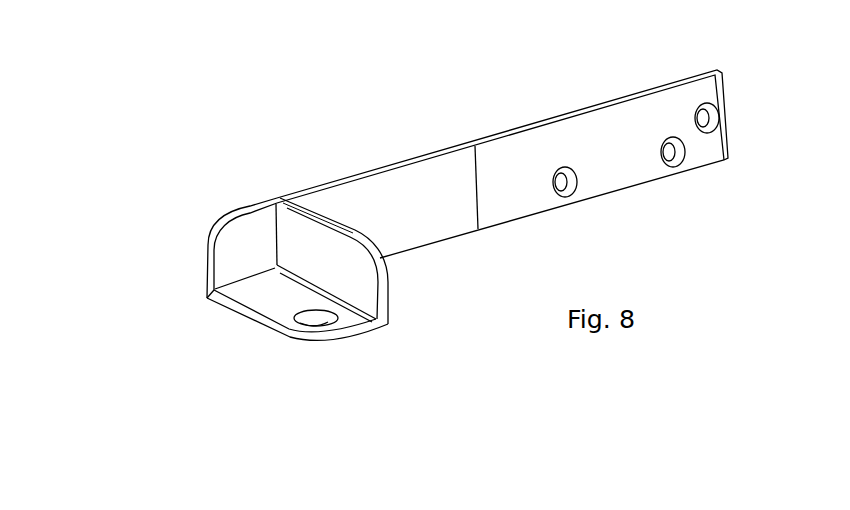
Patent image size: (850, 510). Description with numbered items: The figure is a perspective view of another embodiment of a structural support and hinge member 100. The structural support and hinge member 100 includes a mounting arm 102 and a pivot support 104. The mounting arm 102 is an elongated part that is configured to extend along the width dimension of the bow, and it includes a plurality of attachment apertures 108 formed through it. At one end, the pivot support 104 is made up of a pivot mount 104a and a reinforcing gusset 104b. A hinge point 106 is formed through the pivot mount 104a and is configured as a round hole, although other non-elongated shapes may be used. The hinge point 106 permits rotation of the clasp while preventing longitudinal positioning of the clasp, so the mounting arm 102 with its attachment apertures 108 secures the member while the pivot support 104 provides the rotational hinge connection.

The structural support and hinge member 100 is at (487, 250).
The mounting arm 102 is at (603, 137).
The pivot support 104 is at (295, 352).
The pivot mount 104a is at (247, 305).
The reinforcing gusset 104b is at (343, 252).
The hinge point 106 is at (322, 321).
The attachment apertures 108 is at (720, 118).